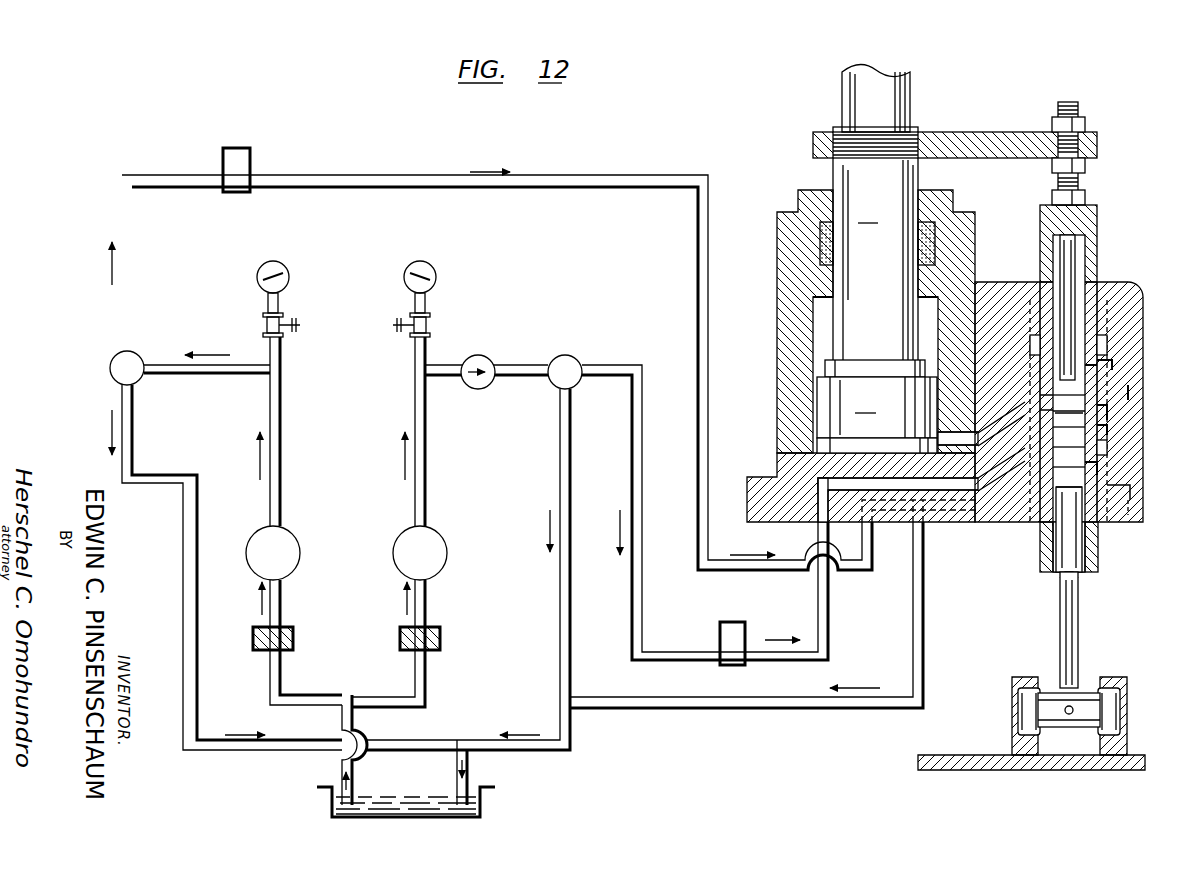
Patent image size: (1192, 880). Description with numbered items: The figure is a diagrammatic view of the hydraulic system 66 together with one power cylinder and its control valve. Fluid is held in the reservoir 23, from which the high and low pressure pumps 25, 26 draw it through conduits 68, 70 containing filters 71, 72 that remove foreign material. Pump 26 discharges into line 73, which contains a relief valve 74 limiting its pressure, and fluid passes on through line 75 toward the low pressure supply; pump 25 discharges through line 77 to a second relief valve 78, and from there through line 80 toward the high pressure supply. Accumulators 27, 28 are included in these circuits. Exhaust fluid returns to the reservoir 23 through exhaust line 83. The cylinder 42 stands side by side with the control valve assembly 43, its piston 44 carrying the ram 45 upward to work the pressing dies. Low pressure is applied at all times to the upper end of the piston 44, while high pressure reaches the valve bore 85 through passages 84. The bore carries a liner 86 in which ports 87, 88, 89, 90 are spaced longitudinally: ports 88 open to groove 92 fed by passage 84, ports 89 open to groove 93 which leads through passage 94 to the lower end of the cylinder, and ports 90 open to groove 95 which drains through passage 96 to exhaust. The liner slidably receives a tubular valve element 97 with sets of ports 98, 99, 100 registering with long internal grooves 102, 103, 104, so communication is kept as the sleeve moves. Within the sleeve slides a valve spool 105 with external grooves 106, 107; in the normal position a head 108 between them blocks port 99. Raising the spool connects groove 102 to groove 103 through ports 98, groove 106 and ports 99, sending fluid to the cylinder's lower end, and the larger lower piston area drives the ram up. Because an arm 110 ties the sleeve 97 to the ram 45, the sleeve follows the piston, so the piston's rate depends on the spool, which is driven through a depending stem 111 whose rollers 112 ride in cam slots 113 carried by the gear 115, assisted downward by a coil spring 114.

The reservoir 23 is at (495, 806).
The high pressure pump 25 is at (437, 537).
The low pressure pump 26 is at (290, 537).
The accumulator 27 is at (243, 148).
The accumulator 28 is at (720, 624).
The cylinder 42 is at (777, 400).
The control valve assembly 43 is at (1006, 290).
The piston 44 is at (877, 406).
The ram 45 is at (875, 220).
The hydraulic system 66 is at (443, 160).
The conduit 68 is at (282, 682).
The conduit 70 is at (427, 683).
The filter 71 is at (293, 633).
The filter 72 is at (440, 634).
The line 73 is at (282, 438).
The relief valve 74 is at (110, 368).
The line 75 is at (362, 188).
The line 77 is at (427, 480).
The second relief valve 78 is at (577, 359).
The line 80 is at (632, 608).
The exhaust line 83 is at (923, 652).
The passage 84 is at (930, 522).
The valve bore 85 is at (1143, 497).
The liner 86 is at (1100, 295).
The ports 87 is at (1110, 472).
The ports 88 is at (1110, 427).
The ports 89 is at (1142, 392).
The ports 90 is at (1108, 336).
The groove 92 is at (1110, 447).
The groove 93 is at (1110, 412).
The passage 94 is at (981, 443).
The groove 95 is at (1108, 332).
The passage 96 is at (1130, 516).
The tubular valve element 97 is at (1097, 233).
The ports 98 is at (1069, 532).
The ports 99 is at (1069, 455).
The ports 100 is at (1098, 356).
The groove 102 is at (1069, 475).
The groove 103 is at (1069, 402).
The groove 104 is at (1103, 312).
The valve spool 105 is at (1048, 546).
The groove 106 is at (1069, 434).
The groove 107 is at (1053, 380).
The head 108 is at (1069, 416).
The arm 110 is at (1000, 131).
The stem 111 is at (1075, 618).
The rollers 112 is at (1020, 720).
The cam slots 113 is at (1015, 693).
The coil spring 114 is at (1060, 250).
The motion transmitting gear 115 is at (976, 770).